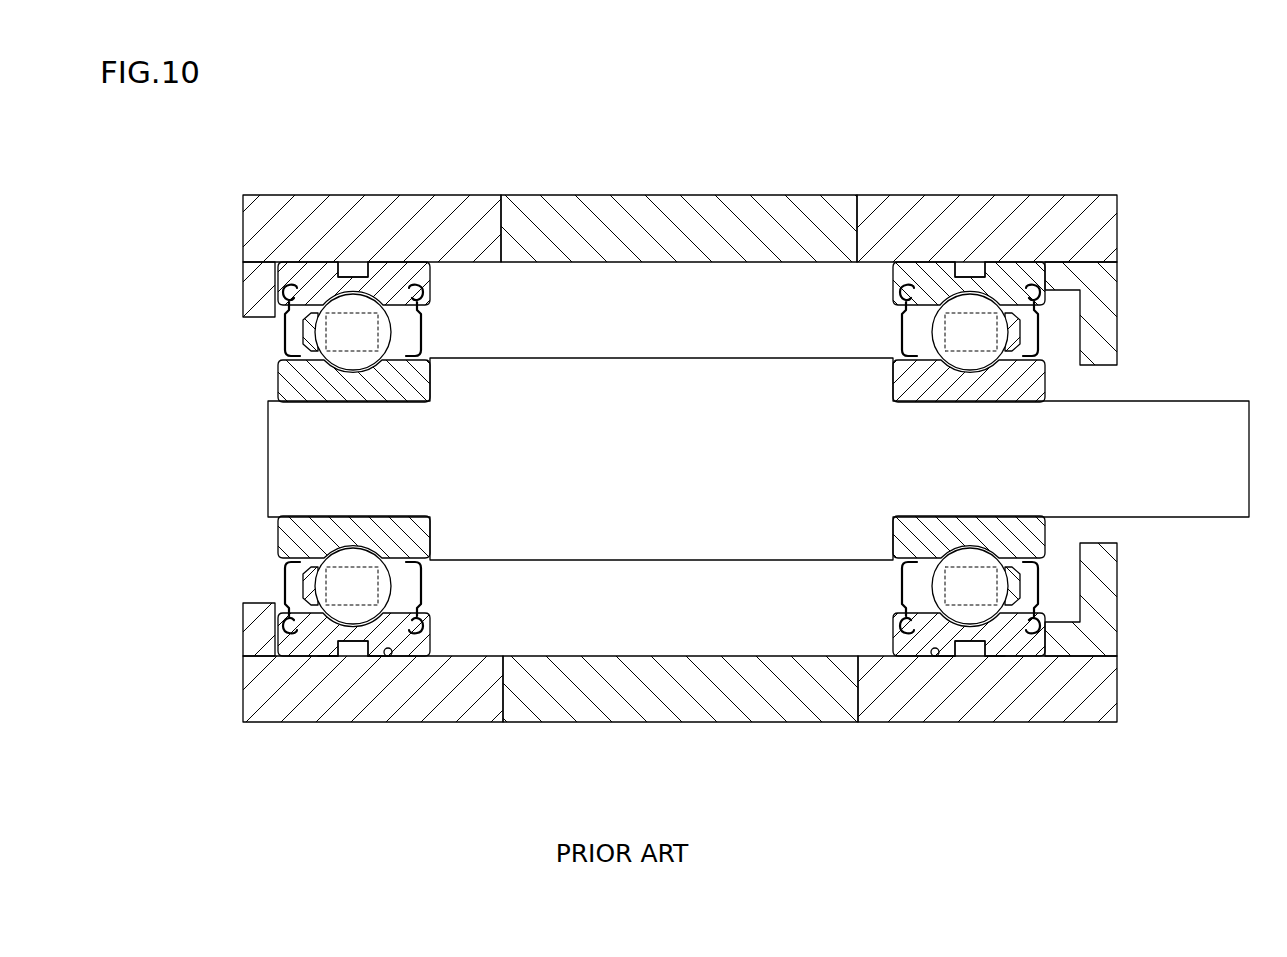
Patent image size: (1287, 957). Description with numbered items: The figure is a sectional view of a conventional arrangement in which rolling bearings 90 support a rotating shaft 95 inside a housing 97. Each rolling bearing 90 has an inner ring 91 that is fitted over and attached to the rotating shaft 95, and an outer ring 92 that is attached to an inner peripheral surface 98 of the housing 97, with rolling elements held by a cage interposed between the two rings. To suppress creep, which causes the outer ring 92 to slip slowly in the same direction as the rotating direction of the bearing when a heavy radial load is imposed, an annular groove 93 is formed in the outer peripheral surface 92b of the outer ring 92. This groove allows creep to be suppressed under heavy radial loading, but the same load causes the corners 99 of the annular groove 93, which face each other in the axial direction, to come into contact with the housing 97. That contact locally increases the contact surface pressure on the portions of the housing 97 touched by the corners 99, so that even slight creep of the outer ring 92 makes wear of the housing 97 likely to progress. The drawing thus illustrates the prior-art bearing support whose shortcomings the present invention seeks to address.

The rolling bearing 90 is at (358, 667).
The inner ring 91 is at (288, 534).
The outer ring 92 is at (313, 645).
The outer peripheral surface 92b is at (312, 262).
The annular groove 93 is at (350, 255).
The rotating shaft 95 is at (1165, 420).
The housing 97 is at (446, 222).
The inner peripheral surface 98 is at (389, 657).
The corners 99 is at (323, 658).